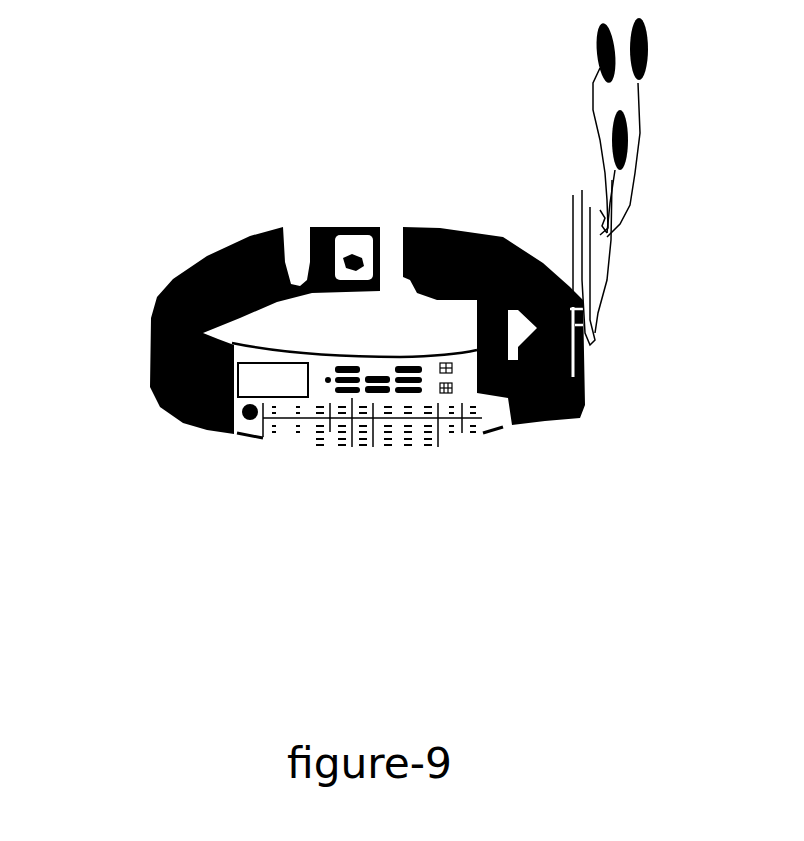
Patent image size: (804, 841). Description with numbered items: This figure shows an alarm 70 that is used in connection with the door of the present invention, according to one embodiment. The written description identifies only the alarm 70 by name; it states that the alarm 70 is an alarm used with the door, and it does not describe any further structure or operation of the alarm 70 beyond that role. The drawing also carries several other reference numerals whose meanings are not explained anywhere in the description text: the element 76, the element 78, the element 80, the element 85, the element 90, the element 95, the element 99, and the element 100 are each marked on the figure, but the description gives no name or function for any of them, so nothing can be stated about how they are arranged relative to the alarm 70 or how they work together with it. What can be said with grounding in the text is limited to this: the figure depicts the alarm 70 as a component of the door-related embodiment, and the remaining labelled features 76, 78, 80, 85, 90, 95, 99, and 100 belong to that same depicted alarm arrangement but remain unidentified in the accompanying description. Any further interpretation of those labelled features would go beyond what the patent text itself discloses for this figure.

The alarm 70 is at (595, 341).
The graduated scale markings 76 is at (448, 395).
The control buttons 78 is at (343, 362).
The function icons 80 is at (453, 368).
The push button 85 is at (243, 418).
The pointer indicator 90 is at (352, 440).
The display window 95 is at (257, 383).
The indicator light 99 is at (328, 380).
The wearable band device 100 is at (440, 227).